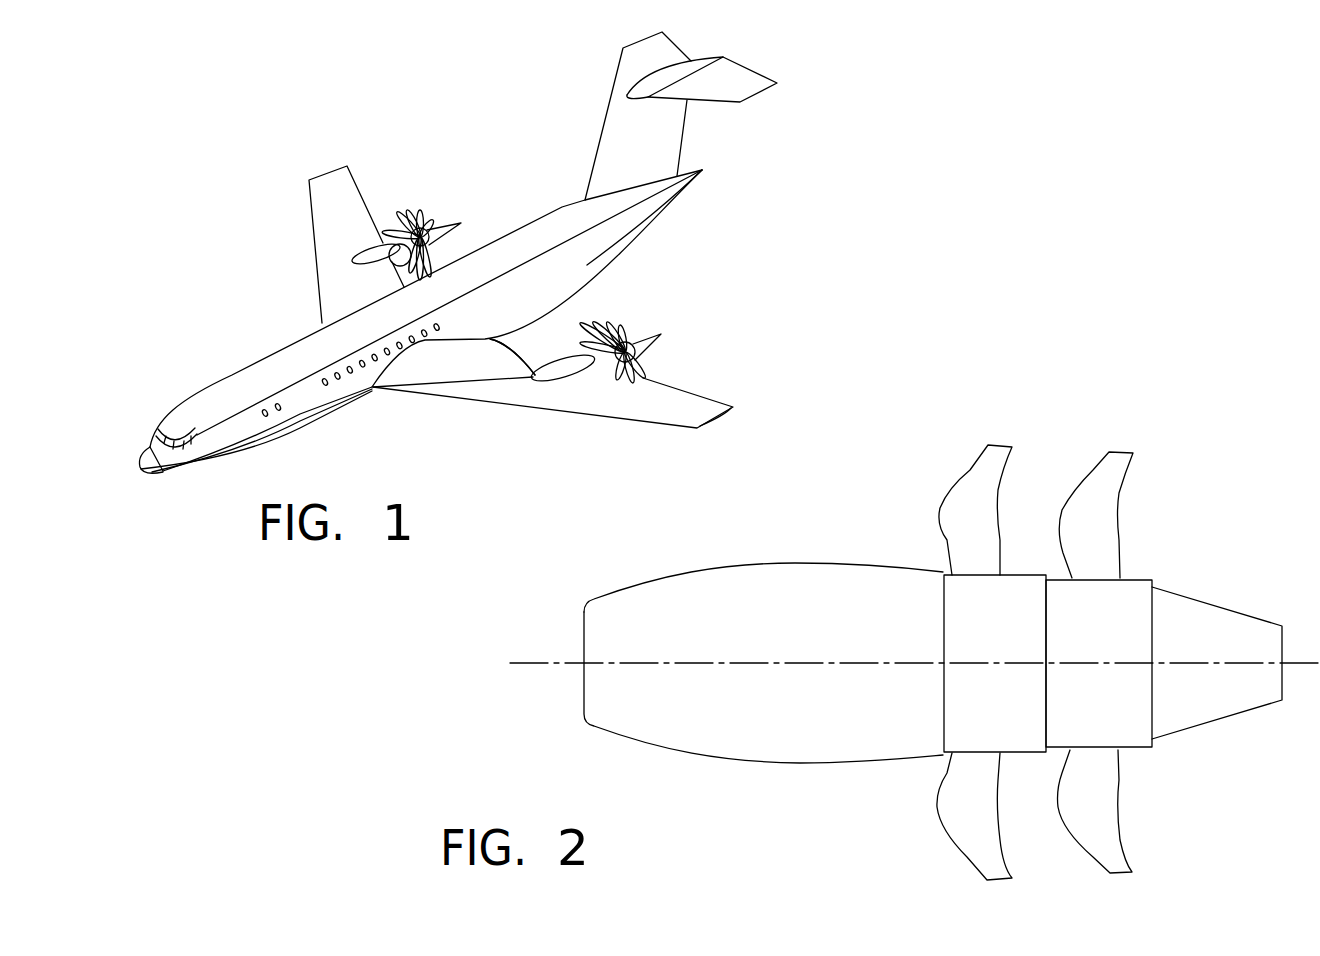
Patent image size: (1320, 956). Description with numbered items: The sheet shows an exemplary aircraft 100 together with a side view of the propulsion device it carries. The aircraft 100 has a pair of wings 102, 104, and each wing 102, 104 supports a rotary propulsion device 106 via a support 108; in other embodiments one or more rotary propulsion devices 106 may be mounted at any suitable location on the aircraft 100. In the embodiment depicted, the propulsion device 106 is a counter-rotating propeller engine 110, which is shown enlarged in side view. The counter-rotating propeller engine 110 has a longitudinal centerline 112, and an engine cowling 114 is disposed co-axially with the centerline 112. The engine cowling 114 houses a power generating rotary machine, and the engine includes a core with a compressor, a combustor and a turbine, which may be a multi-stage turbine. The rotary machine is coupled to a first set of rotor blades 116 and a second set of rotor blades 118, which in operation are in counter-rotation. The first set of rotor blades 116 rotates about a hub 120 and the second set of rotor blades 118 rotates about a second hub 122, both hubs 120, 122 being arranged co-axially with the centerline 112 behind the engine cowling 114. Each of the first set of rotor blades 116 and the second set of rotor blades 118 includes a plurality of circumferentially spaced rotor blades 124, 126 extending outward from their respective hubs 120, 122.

In FIG. 1, the aircraft 100 is at (288, 302).
In FIG. 1, the wing 102 is at (345, 205).
In FIG. 1, the wing 104 is at (620, 392).
In FIG. 1, the rotary propulsion device 106 is at (530, 397).
In FIG. 1, the support 108 is at (567, 363).
In FIG. 1, the counter-rotating propeller engine 110 is at (638, 344).
In FIG. 2, the counter-rotating propeller engine 110 is at (901, 664).
In FIG. 2, the longitudinal centerline 112 is at (778, 662).
In FIG. 2, the engine cowling 114 is at (748, 567).
In FIG. 2, the first set of rotor blades 116 is at (932, 838).
In FIG. 2, the second set of rotor blades 118 is at (1132, 825).
In FIG. 2, the hub 120 is at (1058, 577).
In FIG. 2, the second hub 122 is at (1140, 578).
In FIG. 2, the rotor blade 124 is at (985, 482).
In FIG. 2, the rotor blade 126 is at (1112, 518).